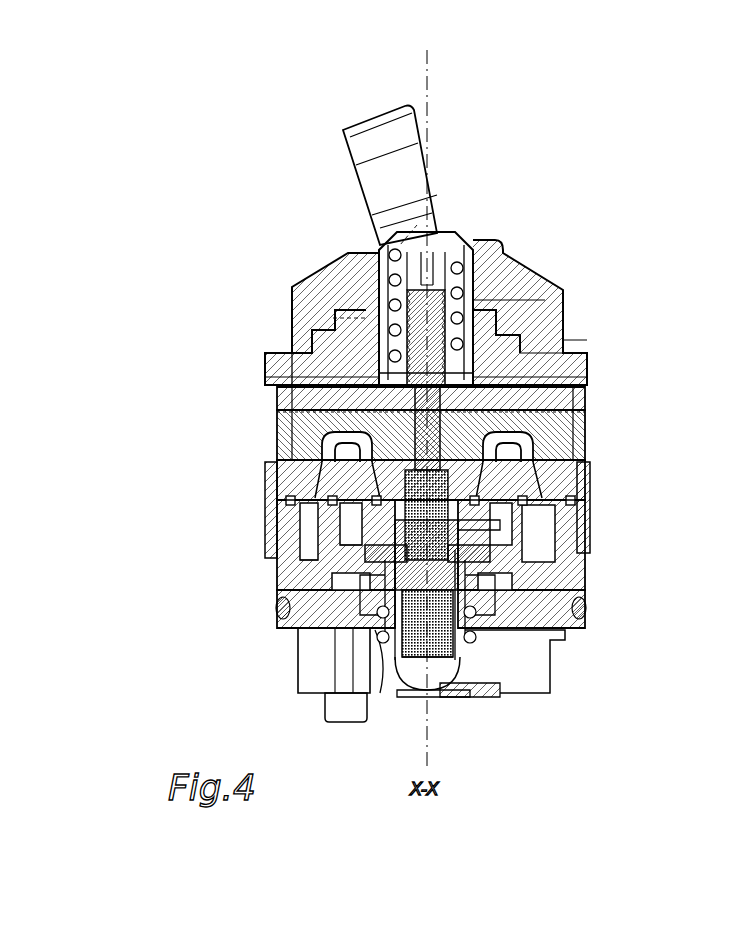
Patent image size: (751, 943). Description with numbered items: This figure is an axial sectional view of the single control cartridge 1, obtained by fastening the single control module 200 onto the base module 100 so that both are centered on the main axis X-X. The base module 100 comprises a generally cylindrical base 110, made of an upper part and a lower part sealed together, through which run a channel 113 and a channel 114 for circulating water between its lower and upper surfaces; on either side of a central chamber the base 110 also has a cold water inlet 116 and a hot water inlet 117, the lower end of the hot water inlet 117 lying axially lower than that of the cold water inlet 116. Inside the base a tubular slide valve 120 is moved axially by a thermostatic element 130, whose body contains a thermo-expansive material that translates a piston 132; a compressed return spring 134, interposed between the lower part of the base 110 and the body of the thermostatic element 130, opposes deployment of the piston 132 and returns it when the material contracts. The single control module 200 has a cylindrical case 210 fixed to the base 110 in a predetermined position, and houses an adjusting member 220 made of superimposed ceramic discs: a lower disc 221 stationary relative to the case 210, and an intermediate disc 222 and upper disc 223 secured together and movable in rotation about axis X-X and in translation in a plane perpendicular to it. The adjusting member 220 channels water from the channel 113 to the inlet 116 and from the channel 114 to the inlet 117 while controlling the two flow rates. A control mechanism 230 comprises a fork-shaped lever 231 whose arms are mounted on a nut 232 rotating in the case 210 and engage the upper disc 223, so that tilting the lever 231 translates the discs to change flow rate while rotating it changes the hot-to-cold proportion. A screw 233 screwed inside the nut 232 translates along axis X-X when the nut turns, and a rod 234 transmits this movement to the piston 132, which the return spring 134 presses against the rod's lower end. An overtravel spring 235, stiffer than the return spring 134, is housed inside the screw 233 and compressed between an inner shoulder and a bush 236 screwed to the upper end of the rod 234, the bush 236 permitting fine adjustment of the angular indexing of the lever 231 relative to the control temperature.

The single control cartridge 1 is at (118, 492).
The base module 100 is at (272, 585).
The base 110 is at (296, 652).
The channel 113 is at (310, 522).
The channel 114 is at (543, 557).
The cold water inlet 116 is at (335, 558).
The hot water inlet 117 is at (498, 542).
The slide valve 120 is at (523, 537).
The thermostatic element 130 is at (500, 600).
The piston 132 is at (400, 482).
The return spring 134 is at (377, 653).
The single control module 200 is at (276, 400).
The case 210 is at (268, 376).
The adjusting member 220 is at (676, 405).
The lower disc 221 is at (565, 472).
The intermediate disc 222 is at (572, 437).
The upper disc 223 is at (572, 408).
The control mechanism 230 is at (477, 237).
The lever 231 is at (384, 126).
The nut 232 is at (352, 330).
The screw 233 is at (498, 266).
The rod 234 is at (532, 370).
The overtravel spring 235 is at (468, 293).
The bush 236 is at (470, 328).